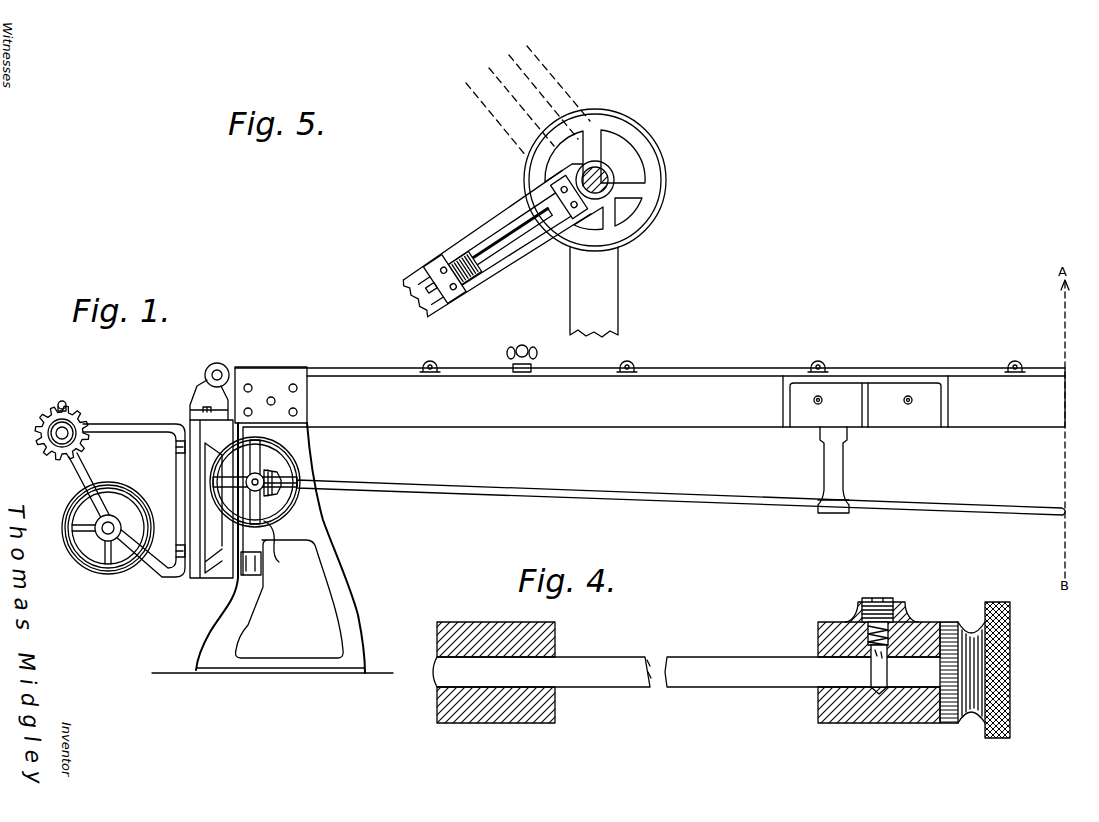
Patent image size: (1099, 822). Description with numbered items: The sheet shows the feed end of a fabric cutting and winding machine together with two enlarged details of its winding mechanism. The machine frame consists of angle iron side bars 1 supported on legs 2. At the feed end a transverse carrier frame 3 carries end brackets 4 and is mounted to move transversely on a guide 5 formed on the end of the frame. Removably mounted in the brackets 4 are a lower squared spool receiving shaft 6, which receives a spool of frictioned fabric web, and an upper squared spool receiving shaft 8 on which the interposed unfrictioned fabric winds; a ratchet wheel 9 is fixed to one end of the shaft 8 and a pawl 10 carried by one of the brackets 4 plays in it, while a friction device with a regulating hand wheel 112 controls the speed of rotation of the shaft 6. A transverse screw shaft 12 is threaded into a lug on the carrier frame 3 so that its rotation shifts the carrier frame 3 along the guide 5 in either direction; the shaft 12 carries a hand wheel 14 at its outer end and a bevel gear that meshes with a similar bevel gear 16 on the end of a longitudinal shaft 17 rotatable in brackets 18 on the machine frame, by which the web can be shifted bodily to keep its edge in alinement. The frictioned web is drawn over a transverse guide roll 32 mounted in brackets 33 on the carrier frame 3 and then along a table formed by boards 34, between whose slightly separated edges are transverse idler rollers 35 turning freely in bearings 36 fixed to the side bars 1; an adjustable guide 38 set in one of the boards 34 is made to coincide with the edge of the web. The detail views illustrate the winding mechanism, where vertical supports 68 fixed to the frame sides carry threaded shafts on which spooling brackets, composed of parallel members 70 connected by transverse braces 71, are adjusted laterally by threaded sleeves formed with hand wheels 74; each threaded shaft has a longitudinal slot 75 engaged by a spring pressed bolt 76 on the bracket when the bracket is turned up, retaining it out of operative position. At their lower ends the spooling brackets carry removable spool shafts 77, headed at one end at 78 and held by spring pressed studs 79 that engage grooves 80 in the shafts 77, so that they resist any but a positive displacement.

In FIG. 1, the angle iron side bars 1 is at (662, 418).
In FIG. 1, the legs 2 is at (356, 592).
In FIG. 1, the transverse carrier frame 3 is at (190, 481).
In FIG. 1, the end brackets 4 is at (135, 422).
In FIG. 1, the guide 5 is at (205, 507).
In FIG. 1, the lower squared spool receiving shaft 6 is at (100, 540).
In FIG. 1, the squared spool receiving shaft 8 is at (48, 434).
In FIG. 1, the ratchet wheel 9 is at (47, 448).
In FIG. 1, the pawl 10 is at (67, 407).
In FIG. 1, the transverse screw shaft 12 is at (245, 478).
In FIG. 1, the hand wheel 14 is at (270, 550).
In FIG. 1, the bevel gear 16 is at (280, 494).
In FIG. 1, the shaft 17 is at (556, 490).
In FIG. 1, the brackets 18 is at (822, 458).
In FIG. 1, the transverse guide roll 32 is at (226, 366).
In FIG. 1, the brackets 33 is at (200, 398).
In FIG. 1, the boards 34 is at (358, 372).
In FIG. 1, the transverse idler rollers 35 is at (435, 368).
In FIG. 1, the bearings 36 is at (435, 375).
In FIG. 1, the guide 38 is at (525, 372).
In FIG. 5, the vertical supports 68 is at (612, 288).
In FIG. 5, the parallel members 70 is at (507, 266).
In FIG. 4, the parallel members 70 is at (436, 708).
In FIG. 5, the transverse braces 71 is at (440, 266).
In FIG. 5, the hand wheels 74 is at (648, 152).
In FIG. 5, the longitudinal slot 75 is at (610, 178).
In FIG. 5, the spring pressed bolt 76 is at (525, 220).
In FIG. 4, the removable spool shafts 77 is at (722, 690).
In FIG. 4, the head 78 is at (1010, 680).
In FIG. 4, the spring pressed studs 79 is at (868, 645).
In FIG. 4, the grooves 80 is at (880, 695).
In FIG. 1, the regulating hand wheel 112 is at (98, 574).